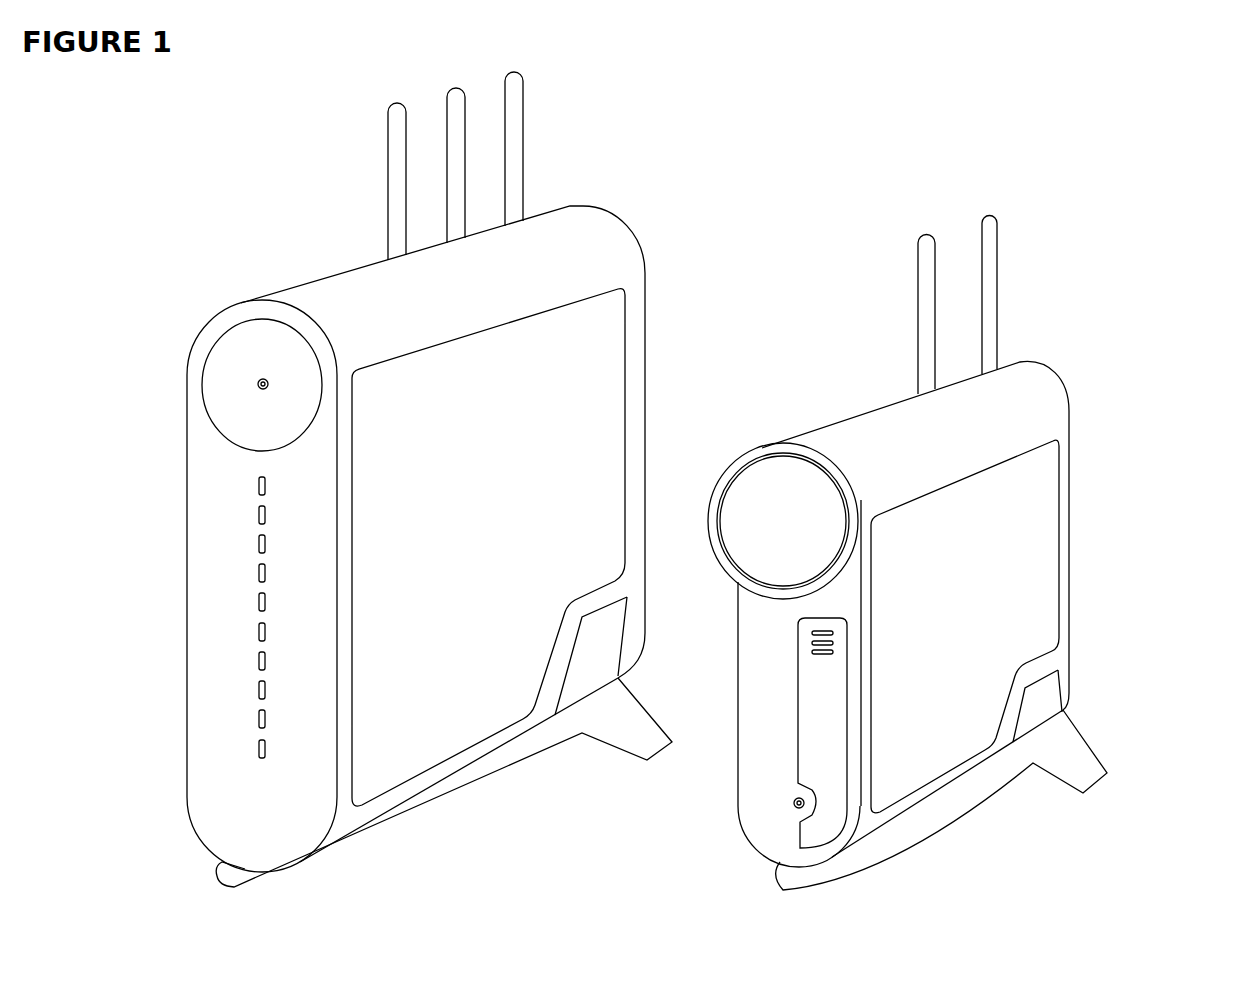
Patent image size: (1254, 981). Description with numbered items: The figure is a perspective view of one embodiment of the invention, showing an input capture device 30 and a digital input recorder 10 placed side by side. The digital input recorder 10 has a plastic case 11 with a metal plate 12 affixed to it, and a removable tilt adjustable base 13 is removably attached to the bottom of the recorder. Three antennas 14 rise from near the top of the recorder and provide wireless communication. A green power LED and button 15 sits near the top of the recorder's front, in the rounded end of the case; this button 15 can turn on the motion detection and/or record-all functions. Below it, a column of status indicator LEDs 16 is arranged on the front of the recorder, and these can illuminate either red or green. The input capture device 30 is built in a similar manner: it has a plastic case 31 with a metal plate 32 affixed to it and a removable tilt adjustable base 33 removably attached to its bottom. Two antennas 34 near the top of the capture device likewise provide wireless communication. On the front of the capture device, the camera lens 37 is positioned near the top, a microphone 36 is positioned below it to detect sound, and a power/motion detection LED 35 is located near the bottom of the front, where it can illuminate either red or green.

The digital input recorder 10 is at (637, 202).
The plastic case 11 is at (363, 300).
The metal plate 12 is at (383, 637).
The removable tilt adjustable base 13 is at (560, 738).
The antennas 14 is at (537, 105).
The green power LED and button 15 is at (238, 387).
The Status indicator LEDs 16 is at (227, 547).
The input capture device 30 is at (1058, 358).
The plastic case 31 is at (860, 437).
The metal plate 32 is at (1027, 525).
The removable tilt adjustable base 33 is at (995, 773).
The antennas 34 is at (910, 263).
The power/motion detection LED 35 is at (787, 808).
The microphone 36 is at (807, 643).
The camera lens 37 is at (770, 490).